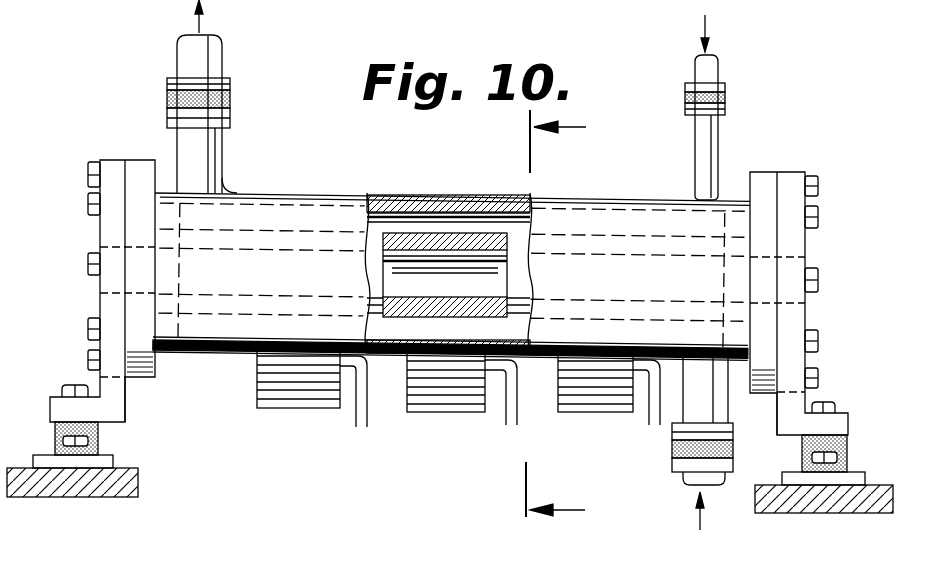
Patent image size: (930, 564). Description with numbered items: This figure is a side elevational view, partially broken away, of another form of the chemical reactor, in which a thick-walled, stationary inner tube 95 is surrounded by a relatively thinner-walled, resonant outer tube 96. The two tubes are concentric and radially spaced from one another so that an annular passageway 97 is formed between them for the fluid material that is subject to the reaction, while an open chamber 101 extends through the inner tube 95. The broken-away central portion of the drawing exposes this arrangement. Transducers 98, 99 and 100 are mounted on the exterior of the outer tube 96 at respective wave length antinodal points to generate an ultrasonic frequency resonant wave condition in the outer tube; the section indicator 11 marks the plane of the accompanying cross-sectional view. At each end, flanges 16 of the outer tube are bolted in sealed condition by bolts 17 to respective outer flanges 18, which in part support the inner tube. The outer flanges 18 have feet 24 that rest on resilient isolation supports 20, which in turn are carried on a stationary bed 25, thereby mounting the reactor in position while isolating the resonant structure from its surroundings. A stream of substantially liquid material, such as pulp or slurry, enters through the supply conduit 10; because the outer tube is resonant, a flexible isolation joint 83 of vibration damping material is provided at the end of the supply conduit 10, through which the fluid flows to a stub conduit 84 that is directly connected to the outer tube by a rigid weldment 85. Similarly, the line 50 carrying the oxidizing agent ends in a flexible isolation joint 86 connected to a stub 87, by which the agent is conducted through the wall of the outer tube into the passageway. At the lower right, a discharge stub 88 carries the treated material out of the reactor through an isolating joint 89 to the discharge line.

The supply conduit 10 is at (197, 52).
The variable speed pump 11 is at (581, 321).
The flanges 16 is at (150, 265).
The bolts 17 is at (90, 206).
The flanges 18 is at (113, 173).
The resilient isolation supports 20 is at (100, 443).
The feet 24 is at (62, 408).
The stationary bed 25 is at (130, 487).
The line 50 is at (712, 68).
The flexible isolation joint 83 is at (230, 97).
The stub conduit 84 is at (220, 137).
The rigid weldment 85 is at (222, 188).
The flexible isolation joint 86 is at (690, 98).
The stub 87 is at (700, 155).
The discharge stub 88 is at (700, 368).
The isolating joint 89 is at (672, 457).
The inner tube 95 is at (418, 240).
The outer tube 96 is at (370, 195).
The annular passageway 97 is at (487, 222).
The transducer 98 is at (298, 408).
The transducer 99 is at (444, 412).
The transducer 100 is at (582, 410).
The open chamber 101 is at (495, 262).